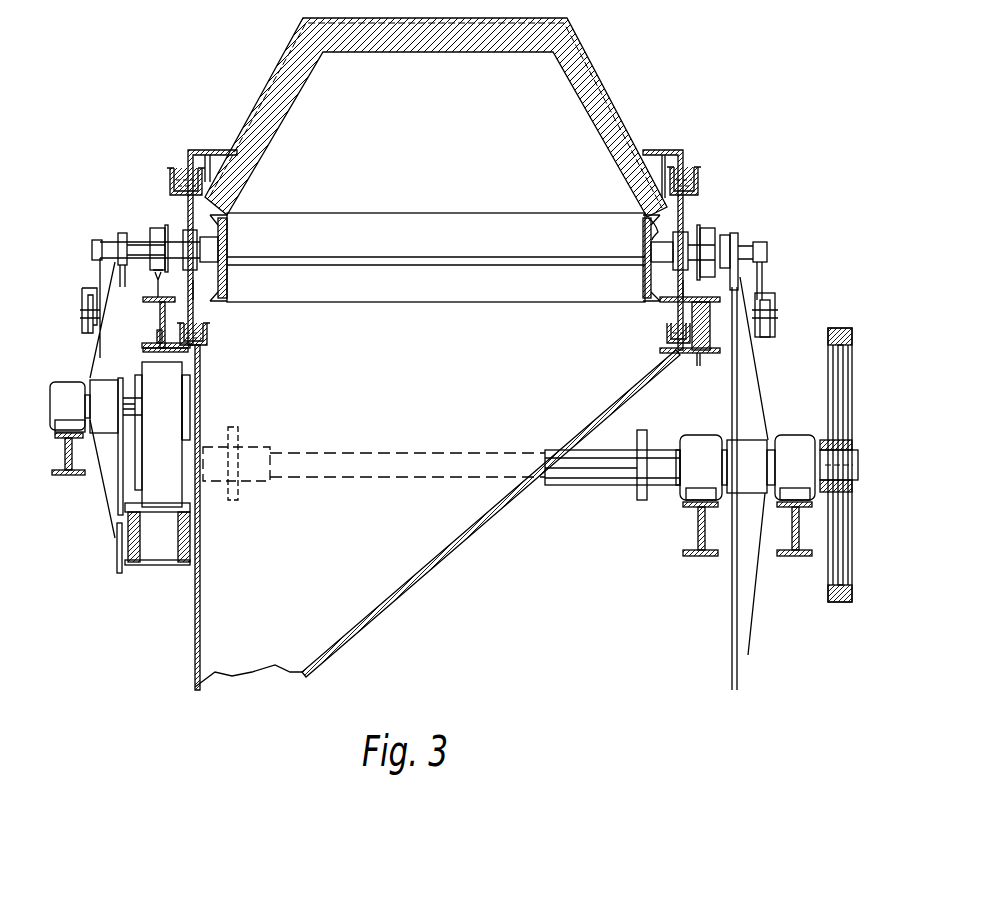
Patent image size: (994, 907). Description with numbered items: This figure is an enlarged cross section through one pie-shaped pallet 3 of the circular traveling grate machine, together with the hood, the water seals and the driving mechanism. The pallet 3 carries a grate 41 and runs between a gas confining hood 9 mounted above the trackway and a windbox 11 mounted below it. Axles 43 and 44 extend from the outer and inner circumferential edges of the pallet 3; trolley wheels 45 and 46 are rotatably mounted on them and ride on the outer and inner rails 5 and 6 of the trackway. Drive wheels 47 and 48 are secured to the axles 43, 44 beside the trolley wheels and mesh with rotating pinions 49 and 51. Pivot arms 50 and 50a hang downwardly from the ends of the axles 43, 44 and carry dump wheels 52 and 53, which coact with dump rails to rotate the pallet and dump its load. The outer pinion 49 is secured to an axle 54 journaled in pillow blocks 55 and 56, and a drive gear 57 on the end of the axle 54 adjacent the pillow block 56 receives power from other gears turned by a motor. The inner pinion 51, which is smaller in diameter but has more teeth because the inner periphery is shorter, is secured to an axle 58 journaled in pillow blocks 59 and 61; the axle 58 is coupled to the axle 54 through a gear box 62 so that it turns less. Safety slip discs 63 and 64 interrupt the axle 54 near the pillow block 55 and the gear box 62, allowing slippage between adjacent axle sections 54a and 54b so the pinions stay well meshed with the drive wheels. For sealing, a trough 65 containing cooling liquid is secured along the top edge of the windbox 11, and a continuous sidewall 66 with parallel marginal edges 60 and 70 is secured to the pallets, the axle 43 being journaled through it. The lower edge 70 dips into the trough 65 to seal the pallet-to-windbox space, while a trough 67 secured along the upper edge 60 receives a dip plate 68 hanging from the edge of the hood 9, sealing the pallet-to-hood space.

The pallet 3 is at (435, 238).
The rail 5 is at (705, 297).
The rail 6 is at (155, 283).
The hood 9 is at (584, 58).
The windbox 11 is at (472, 520).
The grate 41 is at (467, 236).
The axle 43 is at (698, 230).
The axle 44 is at (140, 243).
The trolley wheel 45 is at (712, 232).
The trolley wheel 46 is at (158, 228).
The drive wheel 47 is at (740, 236).
The drive wheel 48 is at (121, 233).
The pinion 49 is at (755, 395).
The pivot arm 50 is at (768, 258).
The pivot arm 50a is at (95, 246).
The pinion 51 is at (100, 357).
The dump wheel 52 is at (774, 300).
The dump wheel 53 is at (82, 305).
The axle 54 is at (592, 480).
The axle section 54a is at (758, 440).
The axle section 54b is at (362, 478).
The pillow block 55 is at (697, 440).
The pillow block 56 is at (790, 440).
The drive gear 57 is at (842, 328).
The axle 58 is at (92, 420).
The pillow block 59 is at (70, 385).
The sidewall marginal edge 60 is at (648, 218).
The pillow block 61 is at (190, 400).
The gear box 62 is at (172, 430).
The safety slip disc 63 is at (645, 432).
The safety slip disc 64 is at (198, 287).
The trough 65 is at (668, 333).
The sidewall 66 is at (686, 212).
The trough 67 is at (698, 172).
The dip plate 68 is at (677, 168).
The sidewall marginal edge 70 is at (672, 350).